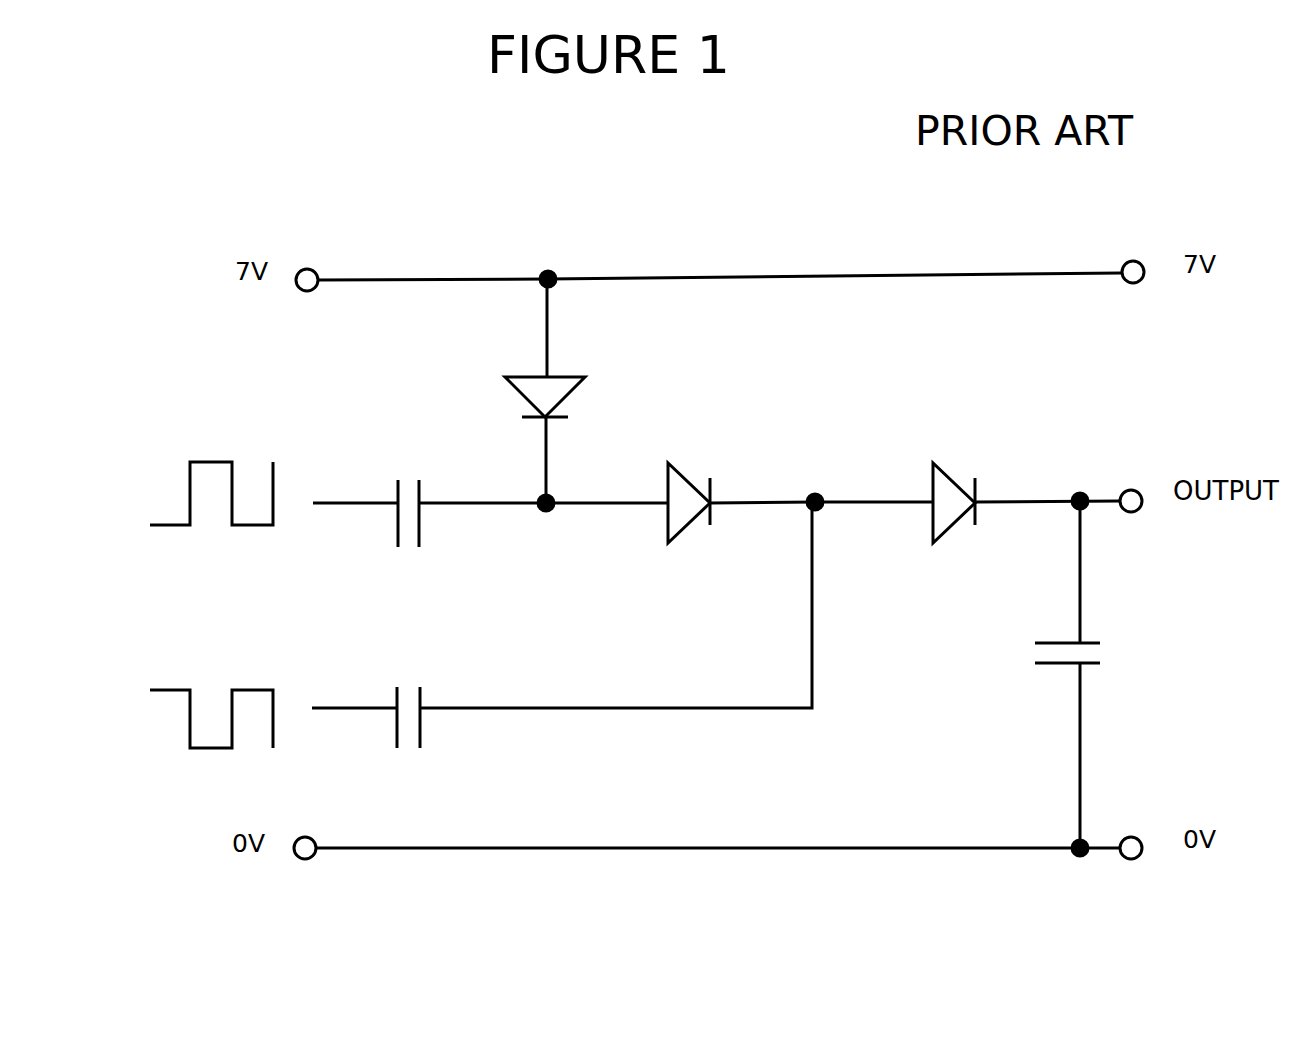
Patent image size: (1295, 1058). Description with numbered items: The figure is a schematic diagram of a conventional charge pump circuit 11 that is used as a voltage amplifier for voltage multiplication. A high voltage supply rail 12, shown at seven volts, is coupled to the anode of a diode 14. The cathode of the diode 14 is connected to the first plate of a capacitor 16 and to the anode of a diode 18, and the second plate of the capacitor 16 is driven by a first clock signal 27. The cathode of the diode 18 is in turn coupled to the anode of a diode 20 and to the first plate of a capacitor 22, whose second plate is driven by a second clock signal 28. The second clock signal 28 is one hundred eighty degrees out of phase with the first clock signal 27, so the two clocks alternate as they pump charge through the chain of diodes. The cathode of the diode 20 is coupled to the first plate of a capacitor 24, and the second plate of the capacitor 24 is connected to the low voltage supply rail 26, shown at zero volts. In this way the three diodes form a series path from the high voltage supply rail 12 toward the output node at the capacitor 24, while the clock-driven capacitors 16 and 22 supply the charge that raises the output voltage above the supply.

The charge pump circuit 11 is at (834, 205).
The high voltage supply rail 12 is at (432, 238).
The diode 14 is at (524, 391).
The capacitor 16 is at (429, 472).
The diode 18 is at (680, 459).
The diode 20 is at (967, 458).
The capacitor 22 is at (562, 625).
The capacitor 24 is at (1048, 674).
The low voltage supply rail 26 is at (718, 812).
The first clock signal 27 is at (192, 461).
The second clock signal 28 is at (181, 687).